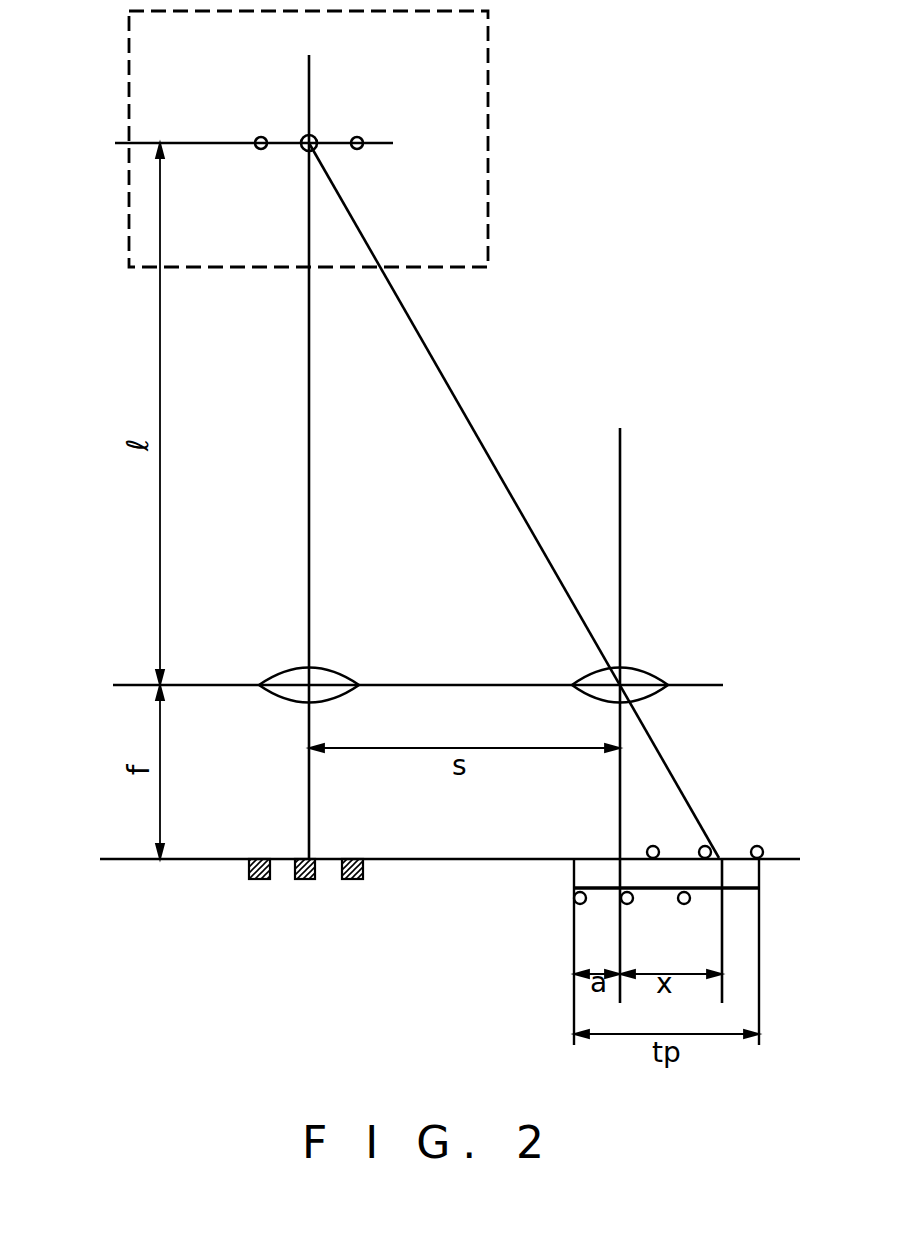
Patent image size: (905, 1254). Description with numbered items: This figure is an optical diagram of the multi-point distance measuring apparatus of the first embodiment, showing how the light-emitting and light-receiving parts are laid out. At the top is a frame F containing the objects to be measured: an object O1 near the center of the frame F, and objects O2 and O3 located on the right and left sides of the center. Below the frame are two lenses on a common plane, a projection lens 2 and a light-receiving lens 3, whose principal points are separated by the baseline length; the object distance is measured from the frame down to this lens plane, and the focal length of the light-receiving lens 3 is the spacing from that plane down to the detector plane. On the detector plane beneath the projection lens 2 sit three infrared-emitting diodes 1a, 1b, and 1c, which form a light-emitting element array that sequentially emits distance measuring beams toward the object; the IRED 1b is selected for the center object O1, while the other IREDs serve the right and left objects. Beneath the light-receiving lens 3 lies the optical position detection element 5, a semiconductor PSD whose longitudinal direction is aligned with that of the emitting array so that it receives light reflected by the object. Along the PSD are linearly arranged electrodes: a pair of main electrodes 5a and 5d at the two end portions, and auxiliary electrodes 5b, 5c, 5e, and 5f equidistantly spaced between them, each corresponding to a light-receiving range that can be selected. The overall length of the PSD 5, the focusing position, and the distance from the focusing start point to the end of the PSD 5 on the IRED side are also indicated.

The frame F is at (488, 62).
The object near the center of the frame O1 is at (314, 136).
The object on the right side of the frame O2 is at (361, 149).
The object on the left side of the frame O3 is at (261, 150).
The projection lens 2 is at (337, 670).
The light-receiving lens 3 is at (657, 669).
The infrared-emitting diode 1a is at (260, 882).
The infrared-emitting diode 1b is at (305, 882).
The infrared-emitting diode 1c is at (353, 882).
The optical position detection element (PSD) 5 is at (766, 881).
The main electrode 5a is at (760, 846).
The auxiliary electrode 5b is at (707, 846).
The auxiliary electrode 5c is at (653, 846).
The main electrode 5d is at (578, 905).
The auxiliary electrode 5e is at (628, 905).
The auxiliary electrode 5f is at (684, 905).